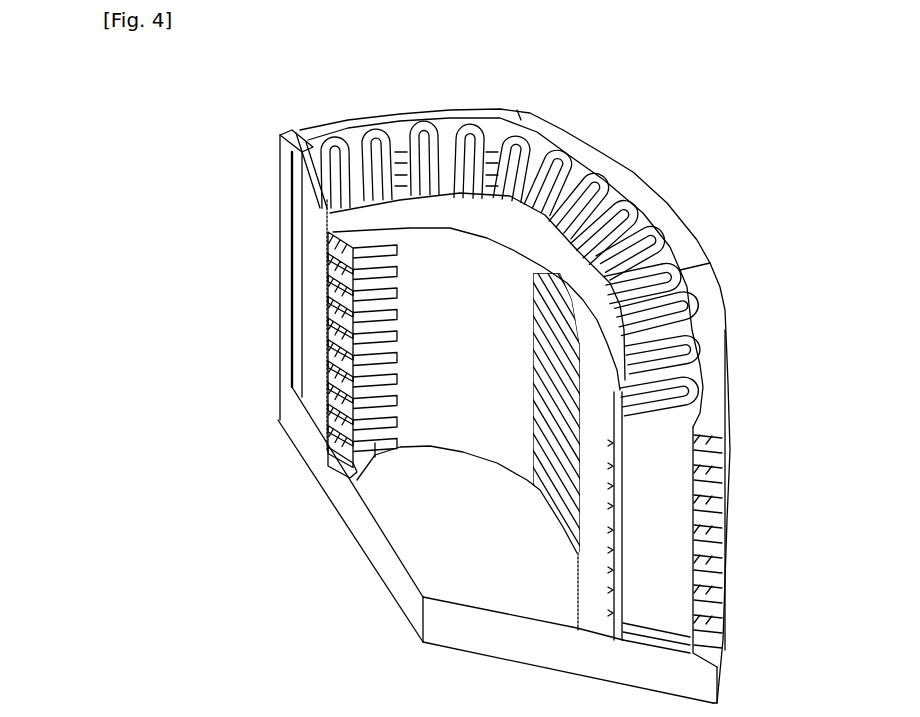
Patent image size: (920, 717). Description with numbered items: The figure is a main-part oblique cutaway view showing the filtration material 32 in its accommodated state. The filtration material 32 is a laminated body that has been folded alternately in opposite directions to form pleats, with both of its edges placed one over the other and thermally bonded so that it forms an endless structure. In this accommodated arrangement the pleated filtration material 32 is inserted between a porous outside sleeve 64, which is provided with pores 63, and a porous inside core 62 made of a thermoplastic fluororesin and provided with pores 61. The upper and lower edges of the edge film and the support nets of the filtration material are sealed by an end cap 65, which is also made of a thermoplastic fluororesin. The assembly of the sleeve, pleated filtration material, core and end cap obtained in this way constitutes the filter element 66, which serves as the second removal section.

The filtration material 32 is at (300, 202).
The pores 61 is at (350, 483).
The porous inside core 62 is at (597, 625).
The pores 63 is at (727, 528).
The porous outside sleeve 64 is at (722, 676).
The end cap 65 is at (493, 647).
The filter element 66 is at (646, 156).